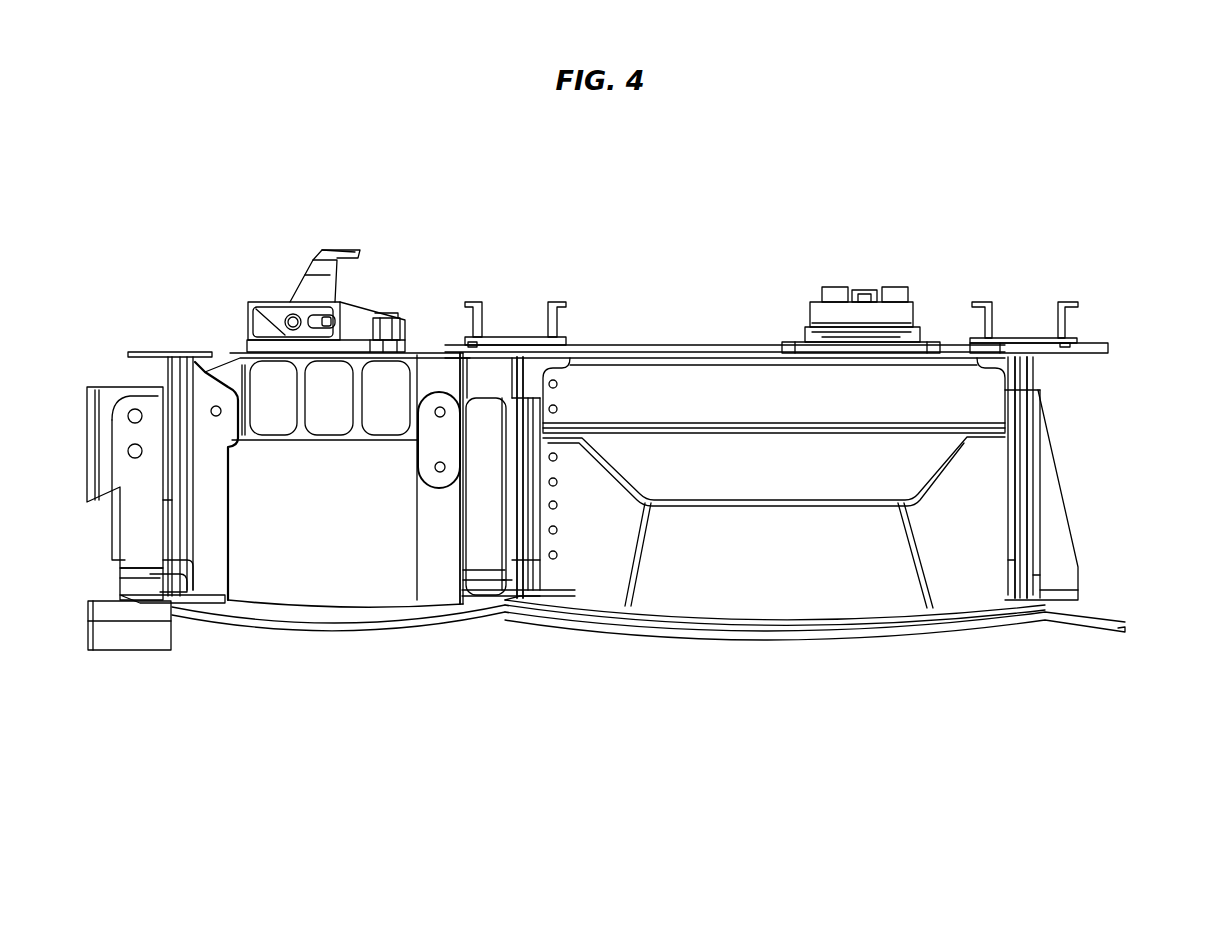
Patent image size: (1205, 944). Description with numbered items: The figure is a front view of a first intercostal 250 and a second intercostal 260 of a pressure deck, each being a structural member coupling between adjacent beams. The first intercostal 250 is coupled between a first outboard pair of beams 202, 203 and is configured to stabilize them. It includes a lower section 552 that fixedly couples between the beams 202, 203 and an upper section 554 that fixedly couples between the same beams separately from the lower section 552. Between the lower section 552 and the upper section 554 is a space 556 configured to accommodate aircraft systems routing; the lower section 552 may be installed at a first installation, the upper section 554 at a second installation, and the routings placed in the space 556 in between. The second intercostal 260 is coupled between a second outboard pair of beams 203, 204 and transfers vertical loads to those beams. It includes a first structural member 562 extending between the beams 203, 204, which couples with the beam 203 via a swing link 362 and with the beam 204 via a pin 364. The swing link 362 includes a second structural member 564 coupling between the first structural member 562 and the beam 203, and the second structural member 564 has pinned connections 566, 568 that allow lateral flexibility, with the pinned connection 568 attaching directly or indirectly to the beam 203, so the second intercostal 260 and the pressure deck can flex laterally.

The beam 202 is at (1030, 358).
The beam 203 is at (525, 350).
The beam 204 is at (176, 388).
The first intercostal 250 is at (657, 318).
The second intercostal 260 is at (228, 338).
The swing link 362 is at (424, 466).
The pin 364 is at (218, 416).
The lower section 552 is at (675, 597).
The upper section 554 is at (738, 378).
The space 556 is at (940, 451).
The first structural member 562 is at (344, 376).
The second structural member 564 is at (442, 393).
The pinned connection 566 is at (435, 412).
The pinned connection 568 is at (435, 467).